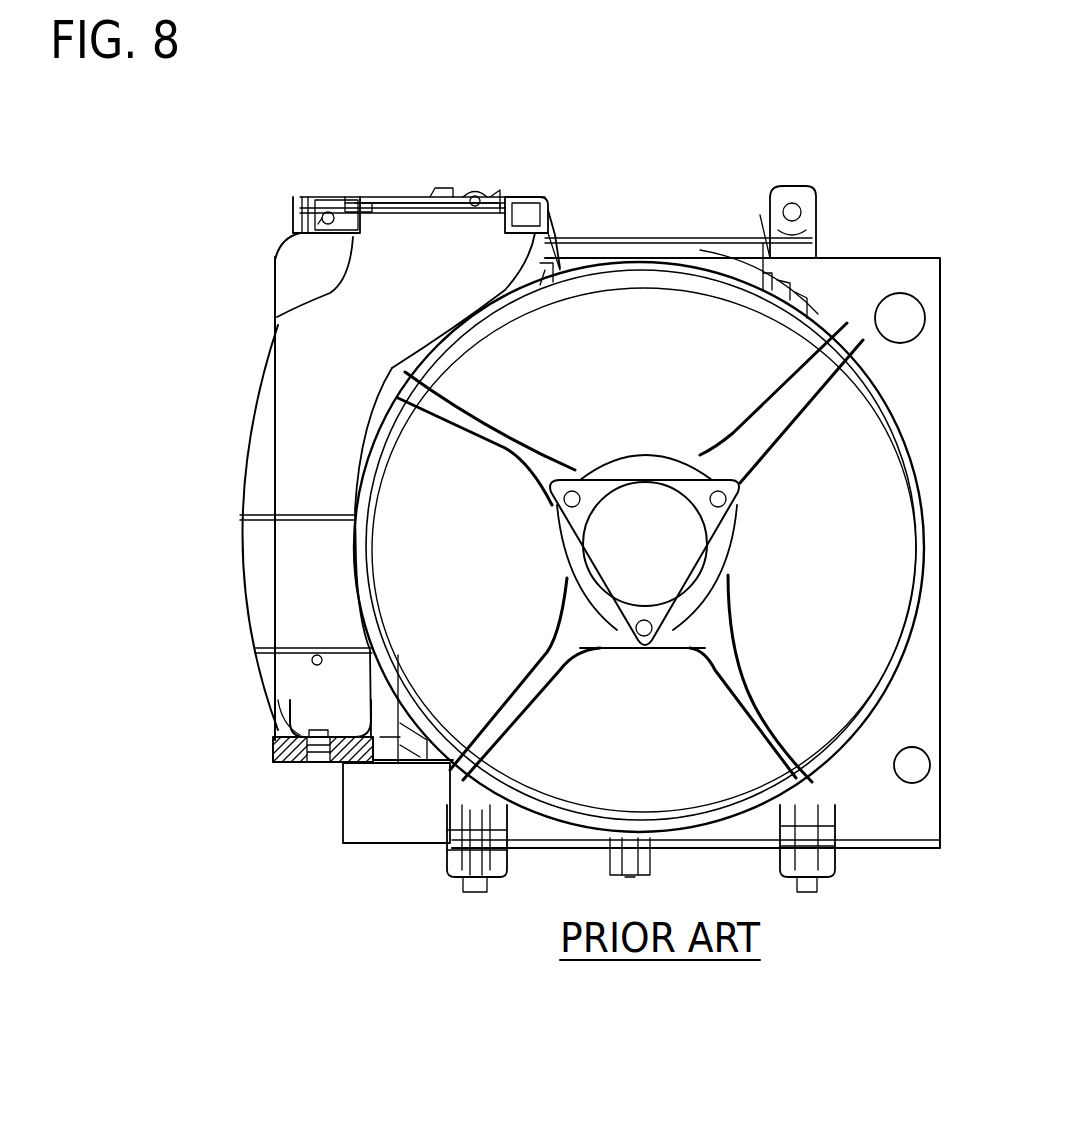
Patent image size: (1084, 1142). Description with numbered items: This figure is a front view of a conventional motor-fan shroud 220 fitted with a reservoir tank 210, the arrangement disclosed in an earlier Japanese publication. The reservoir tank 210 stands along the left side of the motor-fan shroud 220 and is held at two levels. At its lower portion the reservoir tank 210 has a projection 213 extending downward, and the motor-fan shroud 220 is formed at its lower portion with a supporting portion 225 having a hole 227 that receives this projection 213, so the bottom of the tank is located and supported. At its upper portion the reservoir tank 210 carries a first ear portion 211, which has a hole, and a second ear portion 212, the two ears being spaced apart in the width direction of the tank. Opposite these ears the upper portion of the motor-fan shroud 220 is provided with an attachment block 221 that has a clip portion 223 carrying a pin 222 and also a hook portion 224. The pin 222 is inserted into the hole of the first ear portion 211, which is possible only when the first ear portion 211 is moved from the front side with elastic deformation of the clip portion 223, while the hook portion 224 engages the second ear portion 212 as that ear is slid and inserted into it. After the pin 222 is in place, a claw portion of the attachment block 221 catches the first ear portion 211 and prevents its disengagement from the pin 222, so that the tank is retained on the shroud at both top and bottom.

The reservoir tank 210 is at (283, 344).
The first ear portion 211 is at (343, 196).
The second ear portion 212 is at (553, 213).
The projection 213 is at (318, 762).
The motor-fan shroud 220 is at (868, 255).
The attachment block 221 is at (452, 188).
The pin 222 is at (350, 197).
The clip portion 223 is at (296, 201).
The hook portion 224 is at (524, 198).
The supporting portion 225 is at (275, 748).
The hole 227 is at (298, 733).